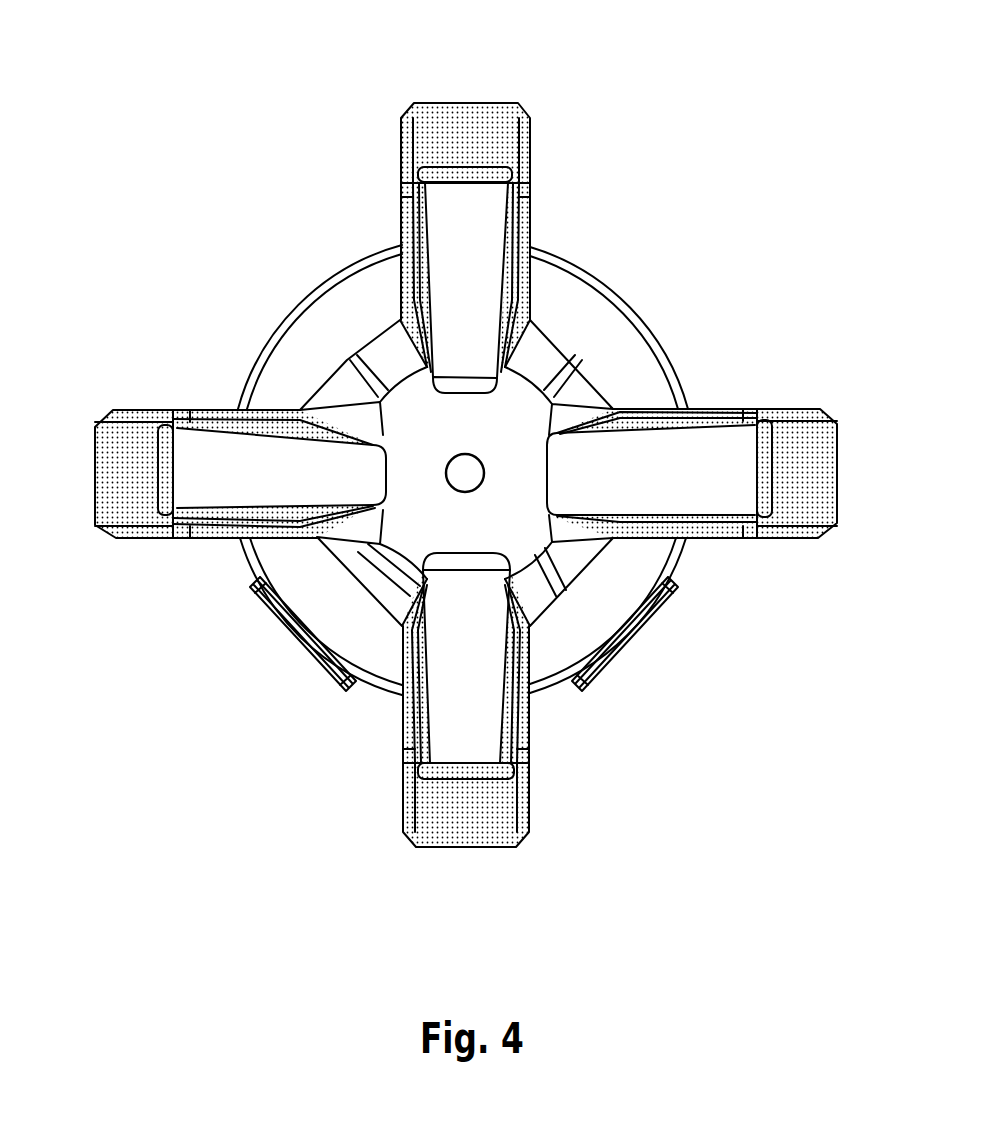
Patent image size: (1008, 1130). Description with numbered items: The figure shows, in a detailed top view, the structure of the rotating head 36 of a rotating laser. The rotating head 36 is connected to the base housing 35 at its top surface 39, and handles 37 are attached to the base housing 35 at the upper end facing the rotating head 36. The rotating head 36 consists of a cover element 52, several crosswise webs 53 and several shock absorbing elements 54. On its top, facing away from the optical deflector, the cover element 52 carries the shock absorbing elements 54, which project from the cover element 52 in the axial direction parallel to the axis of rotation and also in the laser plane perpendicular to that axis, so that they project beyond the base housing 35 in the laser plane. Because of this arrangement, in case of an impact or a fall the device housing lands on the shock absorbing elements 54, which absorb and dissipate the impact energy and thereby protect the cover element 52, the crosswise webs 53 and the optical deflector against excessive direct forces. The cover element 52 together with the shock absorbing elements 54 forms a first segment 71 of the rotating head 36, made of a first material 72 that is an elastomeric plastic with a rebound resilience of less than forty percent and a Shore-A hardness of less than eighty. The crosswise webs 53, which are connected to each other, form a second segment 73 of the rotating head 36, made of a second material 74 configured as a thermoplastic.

The base housing 35 is at (683, 389).
The rotating head 36 is at (176, 220).
The handles 37 is at (397, 150).
The top surface 39 is at (345, 304).
The cover element 52 is at (342, 560).
The crosswise webs 53 is at (422, 542).
The shock absorbing elements 54 is at (470, 220).
The first segment 71 is at (322, 395).
The first material 72 is at (220, 442).
The second segment 73 is at (522, 443).
The second material 74 is at (505, 425).